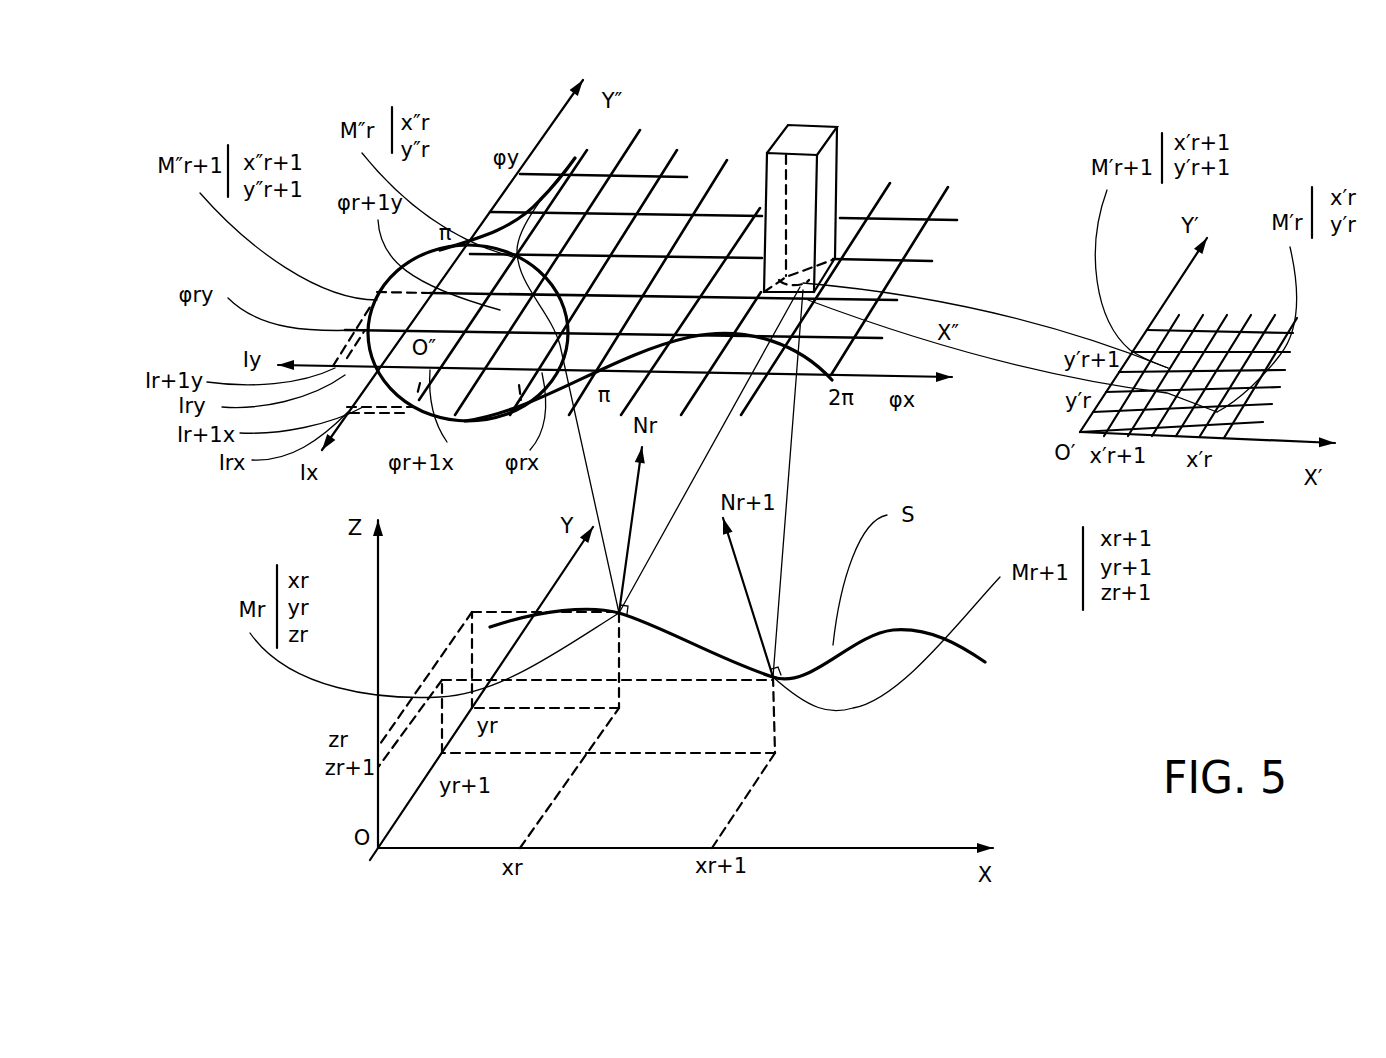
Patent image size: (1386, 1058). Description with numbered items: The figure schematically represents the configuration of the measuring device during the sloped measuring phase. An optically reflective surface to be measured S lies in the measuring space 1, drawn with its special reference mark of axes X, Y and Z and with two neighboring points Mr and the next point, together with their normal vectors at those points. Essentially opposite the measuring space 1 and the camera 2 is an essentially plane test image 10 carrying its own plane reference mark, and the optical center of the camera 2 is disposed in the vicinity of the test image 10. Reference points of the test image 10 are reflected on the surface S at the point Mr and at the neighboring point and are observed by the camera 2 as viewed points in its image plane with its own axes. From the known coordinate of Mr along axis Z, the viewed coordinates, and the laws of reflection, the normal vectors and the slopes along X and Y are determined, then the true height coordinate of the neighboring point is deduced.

The measuring space 1 is at (897, 725).
The camera 2 is at (822, 193).
The test image 10 is at (905, 262).